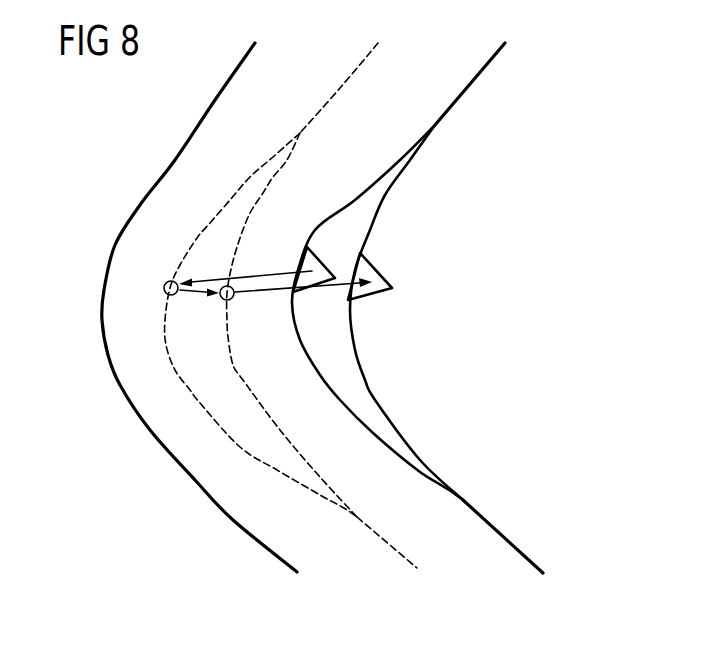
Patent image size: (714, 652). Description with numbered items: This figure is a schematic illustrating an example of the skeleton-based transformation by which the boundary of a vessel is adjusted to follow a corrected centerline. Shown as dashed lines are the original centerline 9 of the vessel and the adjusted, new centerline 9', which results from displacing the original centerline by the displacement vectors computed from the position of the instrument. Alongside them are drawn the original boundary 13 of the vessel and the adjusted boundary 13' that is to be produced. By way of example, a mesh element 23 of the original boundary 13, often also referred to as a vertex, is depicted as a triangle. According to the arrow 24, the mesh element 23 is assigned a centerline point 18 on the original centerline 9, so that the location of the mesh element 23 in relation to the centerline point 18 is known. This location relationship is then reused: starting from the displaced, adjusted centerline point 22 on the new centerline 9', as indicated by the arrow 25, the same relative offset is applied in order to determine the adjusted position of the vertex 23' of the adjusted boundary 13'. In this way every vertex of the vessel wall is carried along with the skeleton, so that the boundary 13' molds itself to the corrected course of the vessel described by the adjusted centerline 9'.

The centerline 9 is at (235, 325).
The adjusted centerline 9' is at (221, 325).
The boundary 13 is at (377, 312).
The adjusted boundary 13' is at (346, 308).
The centerline point 18 is at (163, 287).
The adjusted centerline point 22 is at (222, 300).
The mesh element 23 is at (358, 251).
The adjusted vertex 23' is at (402, 272).
The arrow 24 is at (214, 282).
The arrow 25 is at (236, 295).